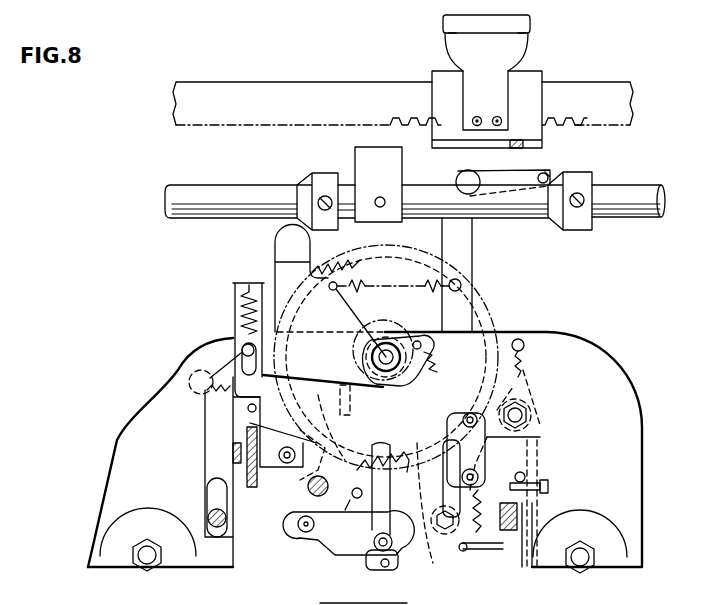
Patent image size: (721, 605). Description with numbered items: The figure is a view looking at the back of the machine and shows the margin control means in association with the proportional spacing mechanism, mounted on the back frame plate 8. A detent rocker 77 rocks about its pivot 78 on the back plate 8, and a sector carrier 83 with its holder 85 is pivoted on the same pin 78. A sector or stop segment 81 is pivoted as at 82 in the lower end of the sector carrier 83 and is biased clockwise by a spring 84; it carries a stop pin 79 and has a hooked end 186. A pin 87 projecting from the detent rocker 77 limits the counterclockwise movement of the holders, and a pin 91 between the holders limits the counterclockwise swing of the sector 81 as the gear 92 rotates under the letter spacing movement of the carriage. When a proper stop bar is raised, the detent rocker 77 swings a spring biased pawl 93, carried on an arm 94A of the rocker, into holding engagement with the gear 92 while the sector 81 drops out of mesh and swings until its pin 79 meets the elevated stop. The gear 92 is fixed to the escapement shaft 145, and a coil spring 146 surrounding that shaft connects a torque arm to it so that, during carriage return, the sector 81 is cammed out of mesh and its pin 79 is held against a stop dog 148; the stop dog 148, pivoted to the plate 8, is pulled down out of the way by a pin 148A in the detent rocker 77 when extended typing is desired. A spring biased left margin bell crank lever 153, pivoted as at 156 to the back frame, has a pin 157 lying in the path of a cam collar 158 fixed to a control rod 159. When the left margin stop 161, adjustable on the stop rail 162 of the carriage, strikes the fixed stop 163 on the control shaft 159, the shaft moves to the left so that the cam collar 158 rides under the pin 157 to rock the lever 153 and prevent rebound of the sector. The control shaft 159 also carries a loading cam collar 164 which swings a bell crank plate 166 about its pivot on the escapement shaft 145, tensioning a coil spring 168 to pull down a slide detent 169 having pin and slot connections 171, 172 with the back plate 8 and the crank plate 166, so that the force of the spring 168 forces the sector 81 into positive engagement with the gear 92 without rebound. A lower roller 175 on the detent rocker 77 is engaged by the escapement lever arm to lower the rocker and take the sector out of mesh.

The back frame plate 8 is at (530, 331).
The detent rocker 77 is at (352, 555).
The pivot pin 78 is at (315, 454).
The stop pin 79 is at (383, 487).
The sector 81 is at (428, 474).
The sector pivot 82 is at (392, 548).
The sector carrier 83 is at (303, 553).
The spring 84 is at (348, 538).
The holder 85 is at (375, 568).
The pin 87 is at (288, 535).
The stop pin 91 is at (319, 531).
The gear 92 is at (368, 291).
The pawl 93 is at (282, 414).
The arm 94A is at (198, 405).
The escapement shaft 145 is at (417, 341).
The coil spring 146 is at (375, 354).
The stop dog 148 is at (466, 552).
The pin 148A is at (440, 517).
The left margin bell crank lever 153 is at (474, 252).
The pivot 156 is at (466, 178).
The pin 157 is at (543, 177).
The cam collar 158 is at (590, 178).
The control rod 159 is at (638, 218).
The left margin stop 161 is at (525, 148).
The stop rail 162 is at (320, 83).
The fixed stop 163 is at (355, 154).
The loading cam collar 164 is at (322, 172).
The bell crank plate 166 is at (333, 378).
The coil spring 168 is at (235, 307).
The slide detent 169 is at (210, 437).
The pin and slot connection 171 is at (208, 508).
The pin and slot connection 172 is at (236, 350).
The lower roller 175 is at (490, 450).
The hooked end 186 is at (349, 509).